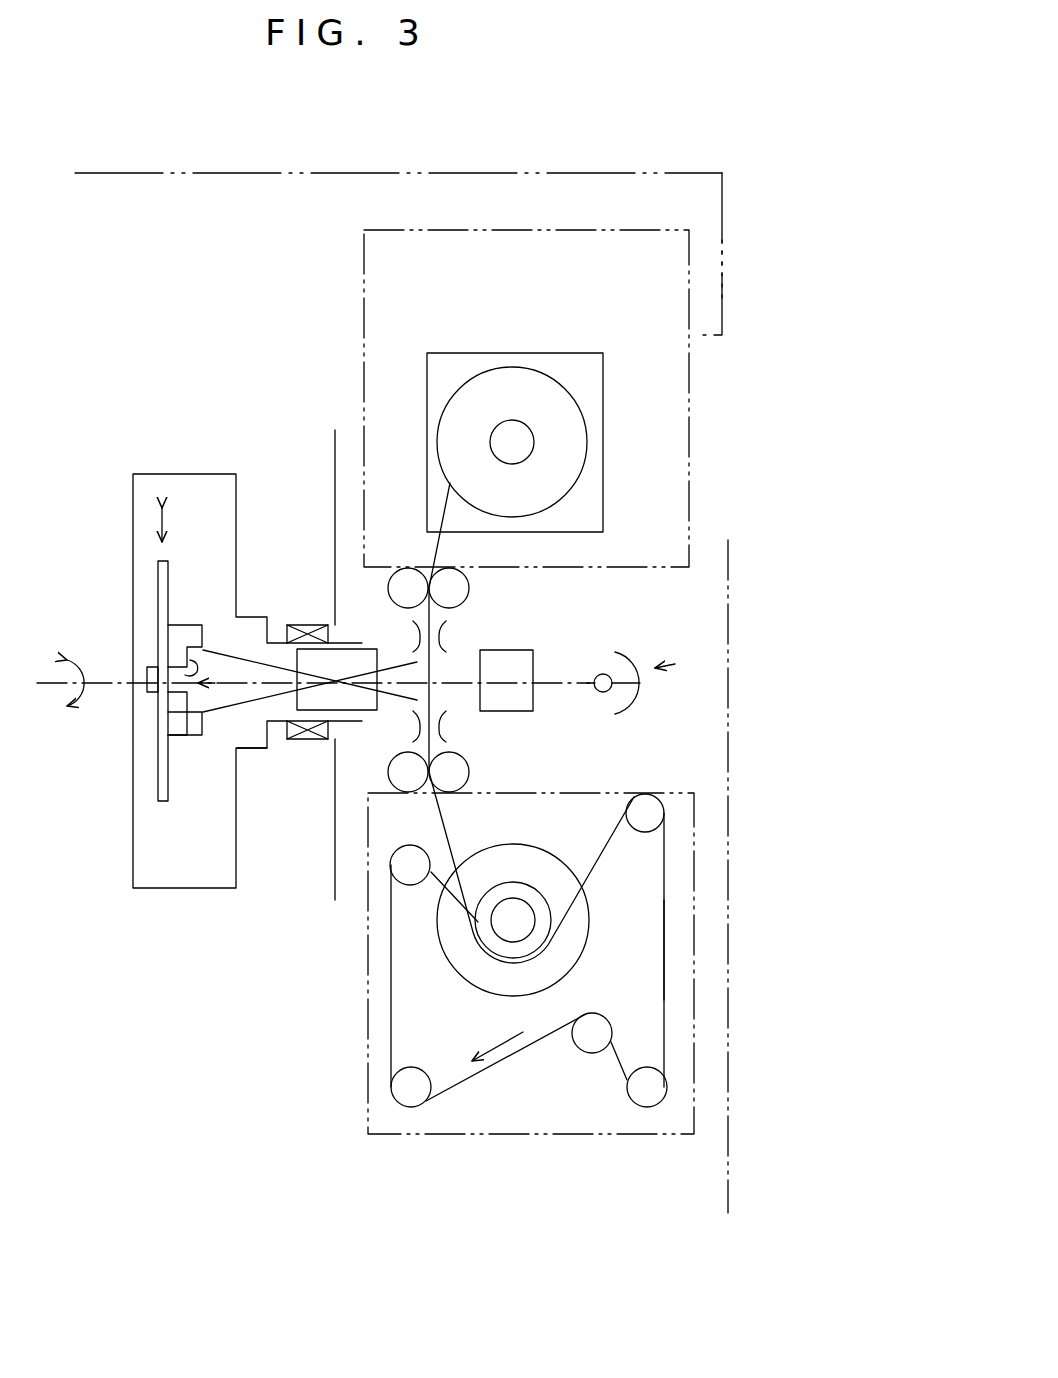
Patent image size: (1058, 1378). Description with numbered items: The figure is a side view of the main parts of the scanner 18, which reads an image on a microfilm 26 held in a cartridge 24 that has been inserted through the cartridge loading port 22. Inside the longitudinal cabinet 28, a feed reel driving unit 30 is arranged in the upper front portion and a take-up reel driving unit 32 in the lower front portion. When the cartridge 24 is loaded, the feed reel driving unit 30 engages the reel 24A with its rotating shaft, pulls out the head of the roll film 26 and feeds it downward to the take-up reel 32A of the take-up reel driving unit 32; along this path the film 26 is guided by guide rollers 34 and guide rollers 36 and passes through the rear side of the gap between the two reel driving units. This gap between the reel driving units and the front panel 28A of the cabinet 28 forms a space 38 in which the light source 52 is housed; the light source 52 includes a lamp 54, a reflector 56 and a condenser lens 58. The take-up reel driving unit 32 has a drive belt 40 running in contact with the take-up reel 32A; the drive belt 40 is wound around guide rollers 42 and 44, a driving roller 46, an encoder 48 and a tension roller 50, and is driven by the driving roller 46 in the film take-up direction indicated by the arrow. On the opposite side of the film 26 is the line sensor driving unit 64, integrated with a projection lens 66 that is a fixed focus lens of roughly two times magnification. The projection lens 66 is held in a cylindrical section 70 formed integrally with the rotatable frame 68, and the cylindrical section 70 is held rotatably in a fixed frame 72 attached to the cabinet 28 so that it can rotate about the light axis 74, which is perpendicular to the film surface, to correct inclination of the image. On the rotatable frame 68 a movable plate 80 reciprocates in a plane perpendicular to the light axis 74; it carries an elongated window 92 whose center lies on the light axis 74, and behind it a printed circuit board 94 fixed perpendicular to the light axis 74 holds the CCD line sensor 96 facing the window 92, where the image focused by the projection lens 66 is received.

The scanner 18 is at (428, 170).
The cabinet 28 is at (272, 170).
The feed reel driving unit 30 is at (700, 240).
The cartridge loading port 22 is at (700, 436).
The cartridge 24 is at (585, 352).
The reel 24A is at (587, 425).
The guide rollers 34 is at (403, 584).
The guide rollers 36 is at (395, 760).
The light axis 74 is at (551, 681).
The line sensor driving unit 64 is at (160, 471).
The rotatable frame 68 is at (238, 814).
The cylindrical section 70 is at (357, 723).
The fixed frame 72 is at (334, 455).
The projection lens 66 is at (373, 648).
The printed circuit board 94 is at (158, 566).
The elongated window 92 is at (190, 660).
The CCD line sensor 96 is at (147, 692).
The movable plate 80 is at (190, 736).
The condenser lens 58 is at (517, 712).
The reflector 56 is at (630, 712).
The lamp 54 is at (638, 688).
The space 38 is at (675, 630).
The light source 52 is at (675, 664).
The take-up reel driving unit 32 is at (695, 1080).
The front panel 28A is at (728, 545).
The microfilm 26 is at (442, 812).
The take-up reel 32A is at (586, 920).
The drive belt 40 is at (668, 990).
The guide roller 42 is at (410, 870).
The guide roller 44 is at (655, 813).
The driving roller 46 is at (648, 1100).
The encoder 48 is at (585, 1040).
The tension roller 50 is at (413, 1102).